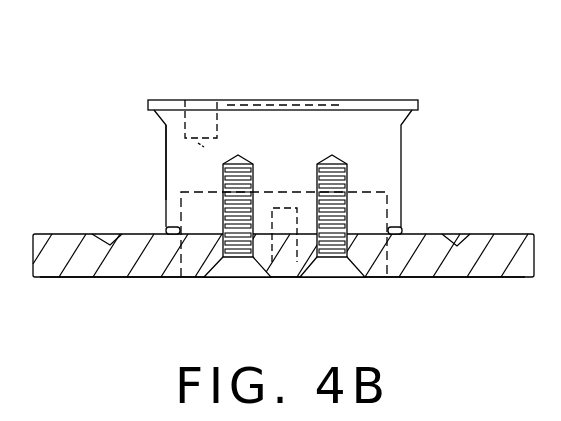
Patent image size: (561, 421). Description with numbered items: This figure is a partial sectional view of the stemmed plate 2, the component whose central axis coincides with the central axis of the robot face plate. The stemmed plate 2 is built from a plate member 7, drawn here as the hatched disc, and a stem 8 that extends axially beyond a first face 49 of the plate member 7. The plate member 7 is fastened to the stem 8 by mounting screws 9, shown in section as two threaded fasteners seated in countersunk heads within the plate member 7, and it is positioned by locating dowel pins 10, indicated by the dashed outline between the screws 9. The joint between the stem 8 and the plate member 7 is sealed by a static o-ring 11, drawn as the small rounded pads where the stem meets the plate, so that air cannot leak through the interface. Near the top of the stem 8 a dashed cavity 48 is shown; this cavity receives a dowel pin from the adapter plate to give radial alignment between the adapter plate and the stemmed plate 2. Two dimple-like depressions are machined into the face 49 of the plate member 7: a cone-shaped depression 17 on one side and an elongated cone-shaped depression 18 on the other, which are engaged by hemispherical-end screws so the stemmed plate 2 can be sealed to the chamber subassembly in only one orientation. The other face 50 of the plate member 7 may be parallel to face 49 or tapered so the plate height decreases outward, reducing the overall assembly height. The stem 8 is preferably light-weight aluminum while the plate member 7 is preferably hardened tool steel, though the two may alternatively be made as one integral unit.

The stemmed plate 2 is at (387, 98).
The plate member 7 is at (72, 255).
The stem 8 is at (175, 122).
The mounting screws 9 is at (235, 266).
The locating dowel pins 10 is at (283, 262).
The static o-ring 11 is at (173, 238).
The cone-shaped depression 17 is at (457, 244).
The elongated cone-shaped depression 18 is at (110, 243).
The cavity 48 is at (203, 112).
The first face 49 is at (420, 234).
The other face 50 is at (117, 278).